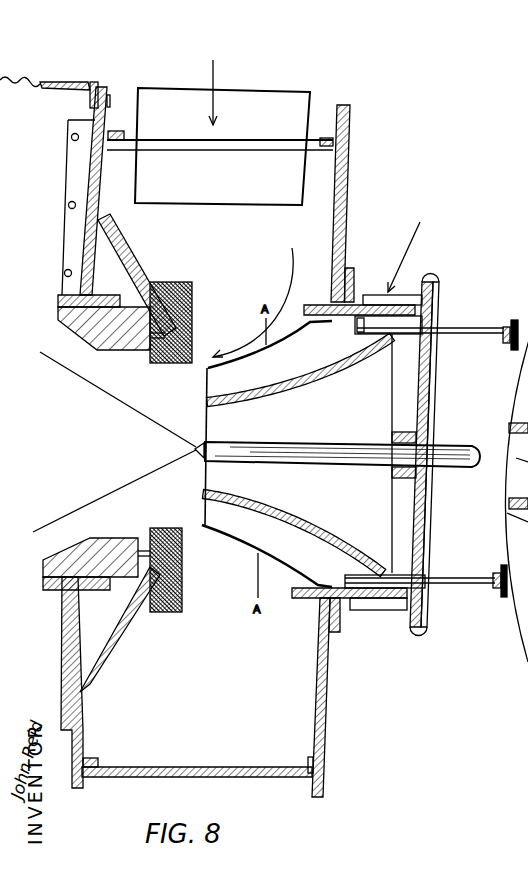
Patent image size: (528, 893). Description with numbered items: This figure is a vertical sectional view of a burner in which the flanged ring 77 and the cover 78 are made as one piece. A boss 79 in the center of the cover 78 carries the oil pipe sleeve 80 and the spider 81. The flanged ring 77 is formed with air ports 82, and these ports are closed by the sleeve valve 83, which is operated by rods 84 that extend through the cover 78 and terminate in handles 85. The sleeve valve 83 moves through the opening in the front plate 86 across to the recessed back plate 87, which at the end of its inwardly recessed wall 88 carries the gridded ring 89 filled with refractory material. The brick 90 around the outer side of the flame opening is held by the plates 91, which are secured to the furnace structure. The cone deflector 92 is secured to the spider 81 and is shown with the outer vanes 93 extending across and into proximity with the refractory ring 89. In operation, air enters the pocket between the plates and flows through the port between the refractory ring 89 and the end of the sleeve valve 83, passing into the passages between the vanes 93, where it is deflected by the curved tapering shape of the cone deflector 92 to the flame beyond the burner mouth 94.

The flanged ring 77 is at (355, 281).
The cover 78 is at (437, 308).
The boss 79 is at (397, 432).
The oil pipe sleeve 80 is at (448, 443).
The spider 81 is at (392, 374).
The air ports 82 is at (397, 297).
The sleeve valve 83 is at (313, 304).
The rods 84 is at (513, 320).
The handles 85 is at (505, 598).
The front plate 86 is at (349, 170).
The recessed back plate 87 is at (108, 205).
The inwardly recessed wall 88 is at (138, 262).
The gridded ring 89 is at (192, 312).
The brick 90 is at (116, 350).
The plates 91 is at (58, 300).
The cone deflector 92 is at (299, 395).
The outer vanes 93 is at (267, 454).
The burner mouth 94 is at (198, 452).